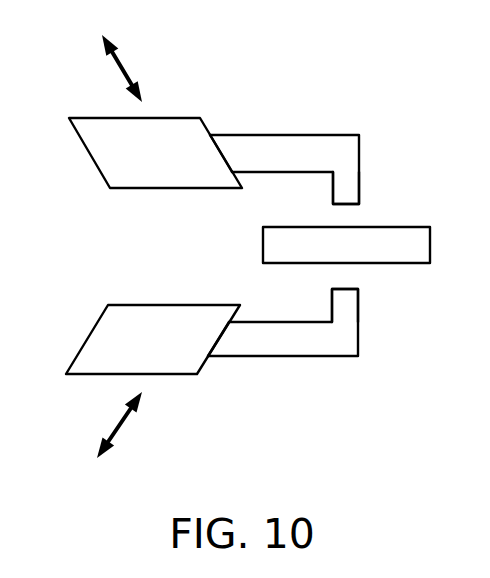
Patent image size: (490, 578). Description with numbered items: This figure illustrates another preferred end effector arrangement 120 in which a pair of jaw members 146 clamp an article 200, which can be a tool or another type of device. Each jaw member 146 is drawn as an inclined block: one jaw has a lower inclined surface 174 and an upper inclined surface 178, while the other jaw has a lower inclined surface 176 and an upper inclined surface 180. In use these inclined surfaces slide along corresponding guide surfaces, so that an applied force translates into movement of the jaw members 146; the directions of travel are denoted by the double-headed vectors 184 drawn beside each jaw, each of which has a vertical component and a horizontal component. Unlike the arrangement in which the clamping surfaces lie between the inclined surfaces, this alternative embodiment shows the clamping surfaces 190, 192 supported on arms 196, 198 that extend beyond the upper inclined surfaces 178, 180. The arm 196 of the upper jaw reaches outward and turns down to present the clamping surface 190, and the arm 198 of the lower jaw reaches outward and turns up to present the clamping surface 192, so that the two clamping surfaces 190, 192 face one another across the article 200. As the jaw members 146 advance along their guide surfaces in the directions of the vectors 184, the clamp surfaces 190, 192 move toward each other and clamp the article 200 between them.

The gripper assembly 120 is at (280, 36).
The jaw members 146 is at (149, 246).
The lower inclined surface 174 is at (97, 165).
The lower inclined surface 176 is at (91, 333).
The upper inclined surface 178 is at (206, 127).
The upper inclined surface 180 is at (205, 362).
The vectors 184 is at (127, 68).
The clamping surface 190 is at (345, 206).
The clamping surface 192 is at (347, 289).
The arm 196 is at (280, 148).
The arm 198 is at (268, 347).
The article 200 is at (263, 246).